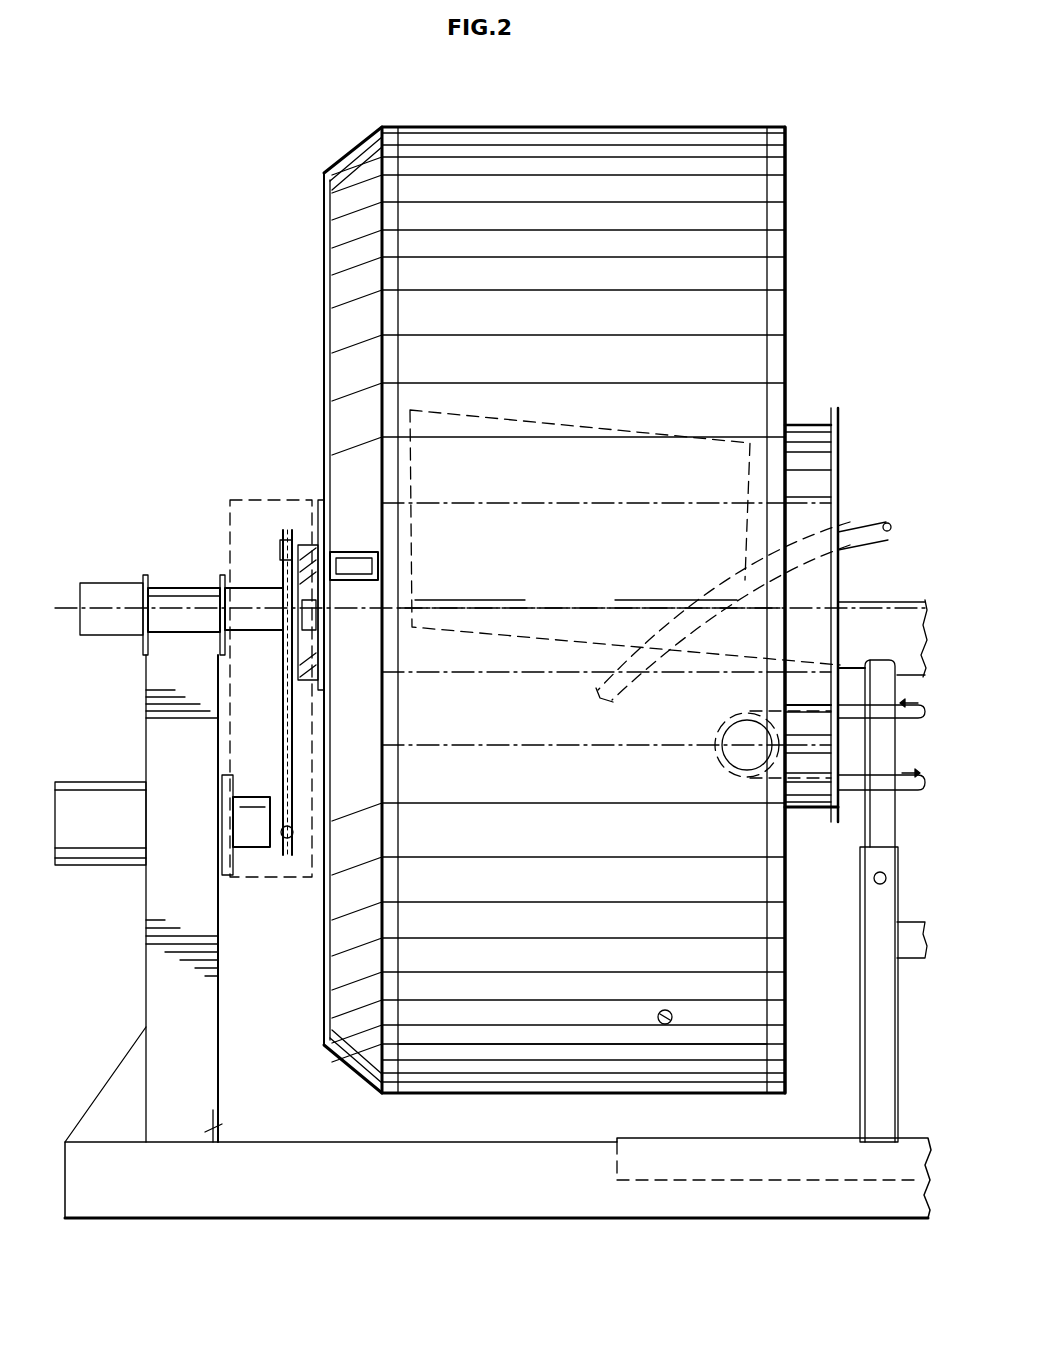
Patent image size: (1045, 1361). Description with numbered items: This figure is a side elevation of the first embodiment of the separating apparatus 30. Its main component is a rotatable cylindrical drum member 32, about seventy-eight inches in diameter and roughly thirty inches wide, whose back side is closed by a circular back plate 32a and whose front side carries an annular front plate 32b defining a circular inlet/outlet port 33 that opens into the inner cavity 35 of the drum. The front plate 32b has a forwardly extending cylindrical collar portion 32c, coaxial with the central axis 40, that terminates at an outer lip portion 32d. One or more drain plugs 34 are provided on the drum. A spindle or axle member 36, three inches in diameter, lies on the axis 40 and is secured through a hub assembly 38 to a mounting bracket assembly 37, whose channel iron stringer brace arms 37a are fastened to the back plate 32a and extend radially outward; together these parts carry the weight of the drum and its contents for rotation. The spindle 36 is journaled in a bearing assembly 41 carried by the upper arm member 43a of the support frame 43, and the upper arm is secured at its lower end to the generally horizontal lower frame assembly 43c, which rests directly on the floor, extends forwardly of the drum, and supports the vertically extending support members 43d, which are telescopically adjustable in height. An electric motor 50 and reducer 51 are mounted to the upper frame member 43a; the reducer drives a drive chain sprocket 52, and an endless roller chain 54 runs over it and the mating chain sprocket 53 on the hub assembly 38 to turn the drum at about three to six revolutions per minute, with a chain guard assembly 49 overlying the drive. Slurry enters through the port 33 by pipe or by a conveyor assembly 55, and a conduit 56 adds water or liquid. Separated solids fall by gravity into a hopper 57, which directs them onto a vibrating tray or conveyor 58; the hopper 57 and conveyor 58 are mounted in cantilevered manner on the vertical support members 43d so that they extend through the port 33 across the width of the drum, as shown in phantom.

The separating apparatus 30 is at (630, 128).
The rotatable cylindrical drum member 32 is at (561, 145).
The circular back plate 32a is at (382, 127).
The annular front plate 32b is at (786, 316).
The cylindrical collar portion 32c is at (815, 470).
The outer lip portion 32d is at (833, 408).
The inlet/outlet port 33 is at (845, 516).
The drain plugs 34 is at (665, 1010).
The inner cavity 35 is at (522, 998).
The spindle or axle member 36 is at (255, 595).
The mounting bracket assembly 37 is at (322, 540).
The channel iron stringer brace arms 37a is at (355, 582).
The hub assembly 38 is at (308, 548).
The central axis 40 is at (563, 605).
The bearing assembly 41 is at (163, 595).
The support frame 43 is at (218, 1000).
The upper arm member 43a is at (210, 1128).
The lower frame assembly 43c is at (557, 1218).
The vertically extending support members 43d is at (877, 1000).
The chain guard assembly 49 is at (248, 500).
The electric motor 50 is at (91, 800).
The reducer 51 is at (255, 850).
The drive chain sprocket 52 is at (287, 840).
The mating chain sprocket 53 is at (286, 545).
The endless roller chain 54 is at (283, 740).
The conveyor assembly 55 is at (858, 790).
The conduit 56 is at (882, 538).
The hopper 57 is at (647, 455).
The vibrating tray or conveyor 58 is at (862, 600).